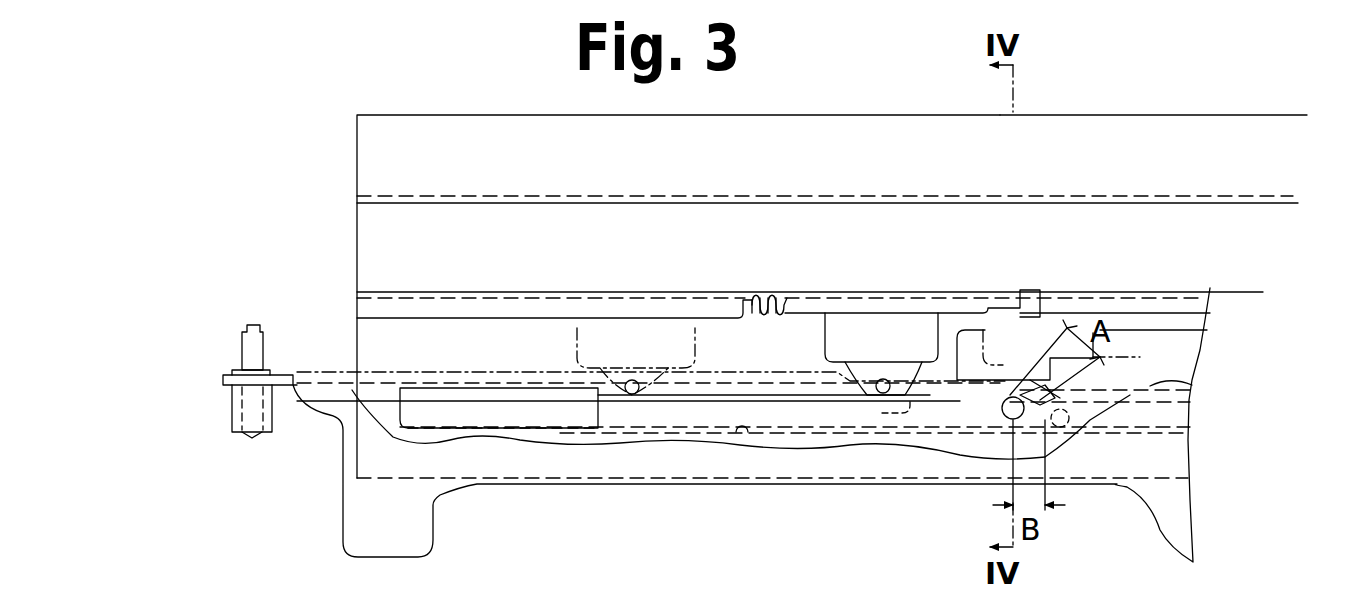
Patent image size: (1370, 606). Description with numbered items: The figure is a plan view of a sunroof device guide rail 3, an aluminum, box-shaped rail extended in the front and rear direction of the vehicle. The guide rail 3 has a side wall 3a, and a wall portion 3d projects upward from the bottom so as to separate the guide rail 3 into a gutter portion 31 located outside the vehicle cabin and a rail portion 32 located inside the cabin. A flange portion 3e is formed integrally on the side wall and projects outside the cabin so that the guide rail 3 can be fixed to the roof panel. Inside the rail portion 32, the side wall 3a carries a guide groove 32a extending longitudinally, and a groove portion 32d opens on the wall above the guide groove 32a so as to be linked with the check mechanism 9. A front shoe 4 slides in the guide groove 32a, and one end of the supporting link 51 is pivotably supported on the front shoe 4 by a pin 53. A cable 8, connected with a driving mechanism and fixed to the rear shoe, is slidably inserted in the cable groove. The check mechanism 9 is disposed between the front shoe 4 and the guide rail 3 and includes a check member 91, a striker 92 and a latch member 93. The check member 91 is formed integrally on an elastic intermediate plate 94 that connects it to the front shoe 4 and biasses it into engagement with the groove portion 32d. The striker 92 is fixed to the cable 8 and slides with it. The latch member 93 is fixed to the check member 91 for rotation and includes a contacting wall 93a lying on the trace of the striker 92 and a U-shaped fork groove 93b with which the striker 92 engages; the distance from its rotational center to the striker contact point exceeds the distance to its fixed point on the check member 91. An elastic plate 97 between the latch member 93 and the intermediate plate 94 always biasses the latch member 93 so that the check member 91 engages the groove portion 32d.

The guide rail 3 is at (514, 110).
The flange portion 3e is at (1077, 138).
The gutter portion 31 is at (388, 248).
The rail portion 32 is at (398, 343).
The wall portion 3d is at (640, 305).
The cable 8 is at (766, 300).
The check mechanism 9 is at (1087, 420).
The striker 92 is at (879, 379).
The elastic plate 97 is at (928, 393).
The check member 91 is at (1010, 397).
The contacting wall 93a is at (1042, 388).
The latch member 93 is at (1058, 427).
The fork groove 93b is at (1190, 385).
The pin 53 is at (253, 440).
The front shoe 4 is at (503, 400).
The supporting link 51 is at (553, 382).
The intermediate plate 94 is at (805, 420).
The guide groove 32a is at (743, 433).
The side wall 3a is at (925, 418).
The groove portion 32d is at (998, 420).